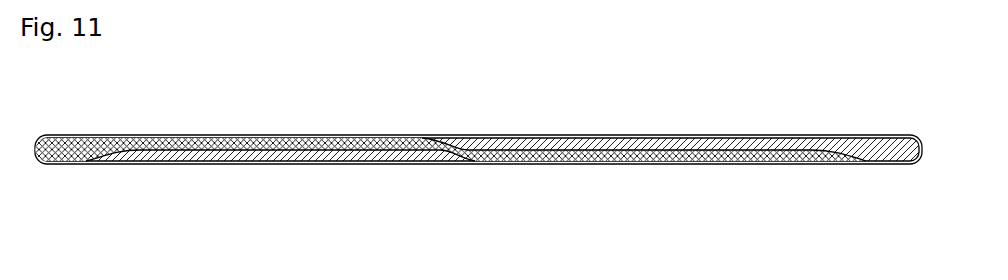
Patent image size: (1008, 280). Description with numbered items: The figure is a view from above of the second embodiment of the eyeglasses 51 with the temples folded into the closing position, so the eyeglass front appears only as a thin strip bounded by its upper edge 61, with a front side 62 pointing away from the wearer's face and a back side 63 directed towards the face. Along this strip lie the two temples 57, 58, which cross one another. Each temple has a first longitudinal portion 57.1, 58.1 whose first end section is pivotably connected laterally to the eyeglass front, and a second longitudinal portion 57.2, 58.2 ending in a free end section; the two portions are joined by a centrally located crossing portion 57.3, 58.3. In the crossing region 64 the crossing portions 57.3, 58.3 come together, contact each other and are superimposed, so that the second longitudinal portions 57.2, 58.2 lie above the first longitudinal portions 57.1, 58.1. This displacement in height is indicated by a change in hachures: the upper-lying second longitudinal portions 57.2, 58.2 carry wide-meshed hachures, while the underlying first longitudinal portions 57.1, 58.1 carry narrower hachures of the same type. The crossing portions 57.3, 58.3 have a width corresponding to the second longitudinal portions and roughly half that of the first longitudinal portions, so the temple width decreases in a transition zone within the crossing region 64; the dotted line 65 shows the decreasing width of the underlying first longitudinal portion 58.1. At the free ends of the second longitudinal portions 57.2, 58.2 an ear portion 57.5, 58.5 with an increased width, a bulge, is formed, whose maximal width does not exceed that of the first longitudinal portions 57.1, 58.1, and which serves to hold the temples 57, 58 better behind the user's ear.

The eyeglasses 51 is at (132, 166).
The temple 57 is at (223, 152).
The first longitudinal portion 57.1 is at (320, 152).
The second longitudinal portion 57.2 is at (636, 136).
The crossing portion 57.3 is at (463, 140).
The ear portion 57.5 is at (880, 150).
The temple 58 is at (683, 152).
The first longitudinal portion 58.1 is at (563, 151).
The second longitudinal portion 58.2 is at (338, 136).
The crossing portion 58.3 is at (463, 152).
The ear portion 58.5 is at (58, 150).
The upper edge 61 is at (437, 160).
The front side 62 is at (262, 134).
The back side 63 is at (748, 166).
The crossing region 64 is at (443, 135).
The dotted line 65 is at (500, 140).